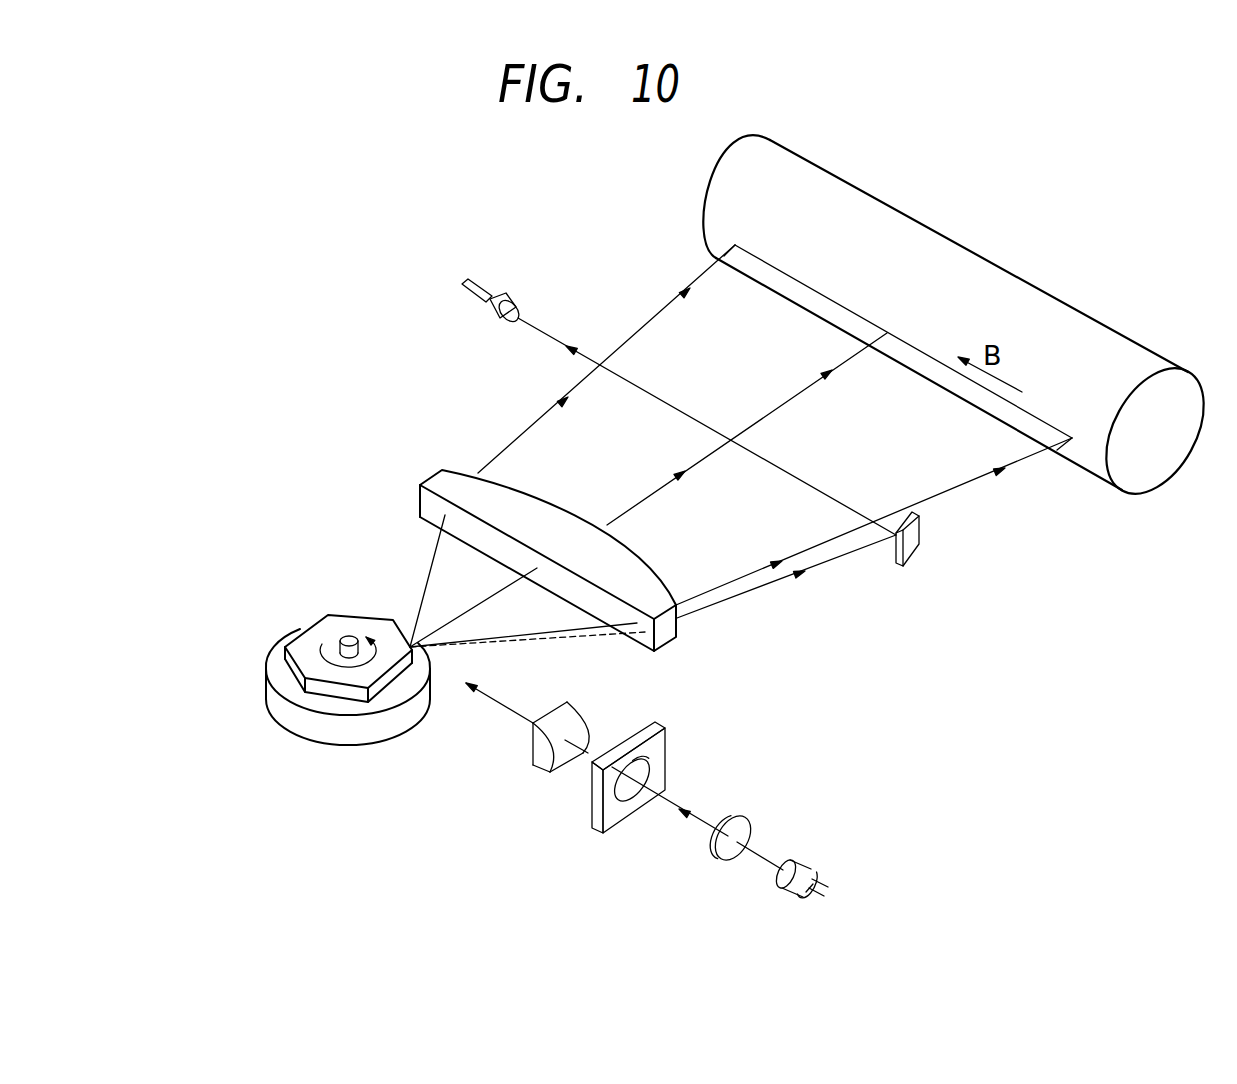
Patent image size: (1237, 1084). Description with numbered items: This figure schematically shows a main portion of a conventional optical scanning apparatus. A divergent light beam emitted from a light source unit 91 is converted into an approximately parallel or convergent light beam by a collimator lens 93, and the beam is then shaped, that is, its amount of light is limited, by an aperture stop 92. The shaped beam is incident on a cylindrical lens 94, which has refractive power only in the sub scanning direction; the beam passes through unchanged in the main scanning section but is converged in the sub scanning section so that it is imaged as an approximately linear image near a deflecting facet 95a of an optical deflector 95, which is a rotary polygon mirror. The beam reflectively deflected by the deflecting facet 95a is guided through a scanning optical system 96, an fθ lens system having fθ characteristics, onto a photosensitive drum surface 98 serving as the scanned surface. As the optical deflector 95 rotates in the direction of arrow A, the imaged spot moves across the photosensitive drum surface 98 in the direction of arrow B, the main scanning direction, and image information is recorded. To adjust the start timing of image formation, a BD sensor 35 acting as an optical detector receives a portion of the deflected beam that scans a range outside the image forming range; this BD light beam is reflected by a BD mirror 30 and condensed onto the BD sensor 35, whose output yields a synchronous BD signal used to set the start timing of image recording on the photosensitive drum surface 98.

The photosensitive drum surface 98 is at (937, 238).
The BD sensor 35 is at (500, 293).
The scanning optical system 96 is at (435, 473).
The optical deflector 95 is at (310, 633).
The deflecting facet 95a is at (320, 693).
The BD mirror 30 is at (915, 543).
The cylindrical lens 94 is at (533, 747).
The aperture stop 92 is at (605, 790).
The collimator lens 93 is at (717, 852).
The light source unit 91 is at (783, 883).